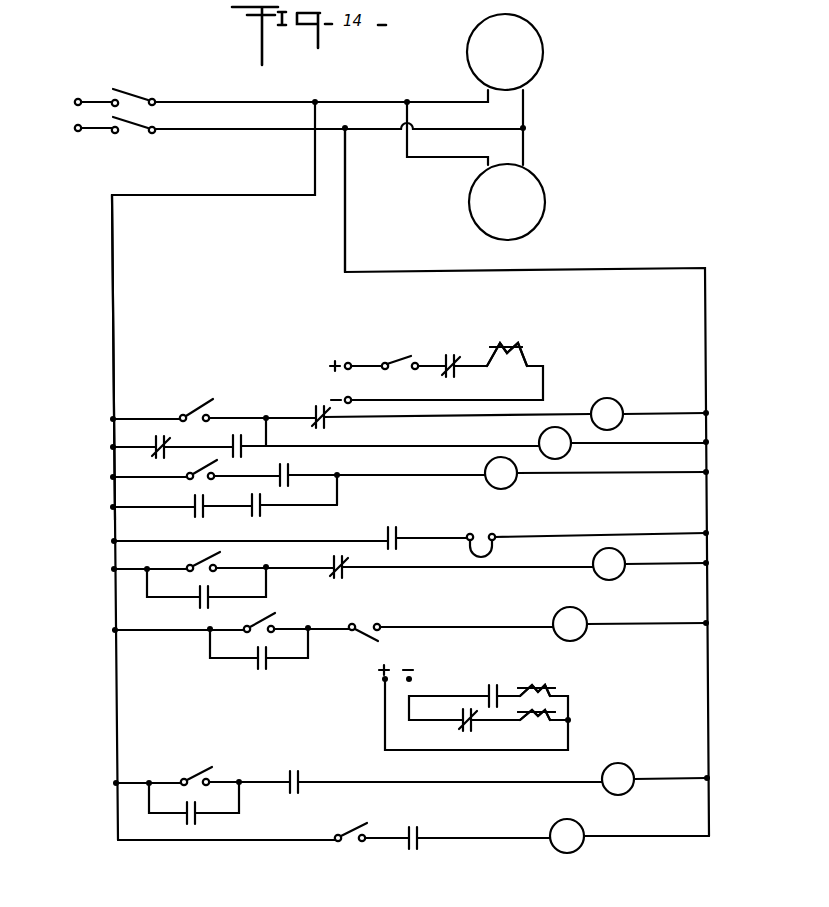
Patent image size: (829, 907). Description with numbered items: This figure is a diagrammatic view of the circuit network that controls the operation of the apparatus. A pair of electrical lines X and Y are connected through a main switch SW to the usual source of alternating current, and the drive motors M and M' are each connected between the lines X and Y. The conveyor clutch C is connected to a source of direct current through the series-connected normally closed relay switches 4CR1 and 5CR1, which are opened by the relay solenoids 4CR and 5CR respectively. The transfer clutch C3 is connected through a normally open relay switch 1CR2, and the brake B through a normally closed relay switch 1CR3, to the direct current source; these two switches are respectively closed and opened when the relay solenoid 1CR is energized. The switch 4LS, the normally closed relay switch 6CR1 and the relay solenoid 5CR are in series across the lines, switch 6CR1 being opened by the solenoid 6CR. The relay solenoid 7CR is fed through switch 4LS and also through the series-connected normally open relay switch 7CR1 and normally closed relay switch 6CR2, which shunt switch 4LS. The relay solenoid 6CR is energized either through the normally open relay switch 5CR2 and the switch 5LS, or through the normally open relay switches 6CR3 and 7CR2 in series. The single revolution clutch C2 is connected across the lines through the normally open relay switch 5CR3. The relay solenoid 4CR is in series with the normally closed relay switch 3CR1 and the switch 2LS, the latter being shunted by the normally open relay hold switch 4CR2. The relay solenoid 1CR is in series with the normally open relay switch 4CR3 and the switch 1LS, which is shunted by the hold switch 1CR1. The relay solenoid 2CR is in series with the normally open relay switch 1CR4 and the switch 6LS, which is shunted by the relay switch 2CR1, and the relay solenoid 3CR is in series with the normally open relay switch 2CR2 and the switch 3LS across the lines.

The main switch SW is at (138, 86).
The electrical line X is at (254, 131).
The electrical line Y is at (351, 205).
The drive motor M is at (505, 52).
The drive motor M' is at (507, 202).
The normally closed relay switch 4CR1 is at (404, 362).
The normally closed relay switch 5CR1 is at (463, 342).
The conveyor clutch C is at (506, 345).
The normally closed relay switch 6CR1 is at (318, 408).
The normally closed relay switch 6CR2 is at (158, 440).
The switch 4LS is at (208, 404).
The normally open relay switch 7CR1 is at (235, 437).
The relay solenoid 5CR is at (626, 397).
The relay solenoid 7CR is at (540, 437).
The switch 5LS is at (214, 470).
The normally open relay switch 5CR2 is at (283, 470).
The relay solenoid 6CR is at (489, 468).
The normally open relay switch 6CR3 is at (196, 512).
The normally open relay switch 7CR2 is at (259, 518).
The normally open relay switch 5CR3 is at (414, 522).
The single revolution clutch C2 is at (472, 526).
The relay solenoid 4CR is at (620, 556).
The switch 2LS is at (204, 565).
The normally closed relay switch 3CR1 is at (338, 578).
The normally open relay hold switch 4CR2 is at (200, 600).
The switch 1LS is at (270, 619).
The relay solenoid 1CR is at (585, 617).
The normally open relay switch 4CR3 is at (361, 641).
The normally open relay hold switch 1CR1 is at (258, 666).
The normally open relay switch 1CR2 is at (486, 688).
The transfer clutch C3 is at (546, 686).
The normally closed relay switch 1CR3 is at (463, 726).
The brake B is at (538, 726).
The relay solenoid 2CR is at (628, 766).
The switch 6LS is at (204, 770).
The normally open relay switch 1CR4 is at (306, 756).
The normally open relay switch 2CR1 is at (195, 815).
The switch 3LS is at (353, 826).
The relay solenoid 3CR is at (575, 822).
The normally open relay switch 2CR2 is at (410, 850).